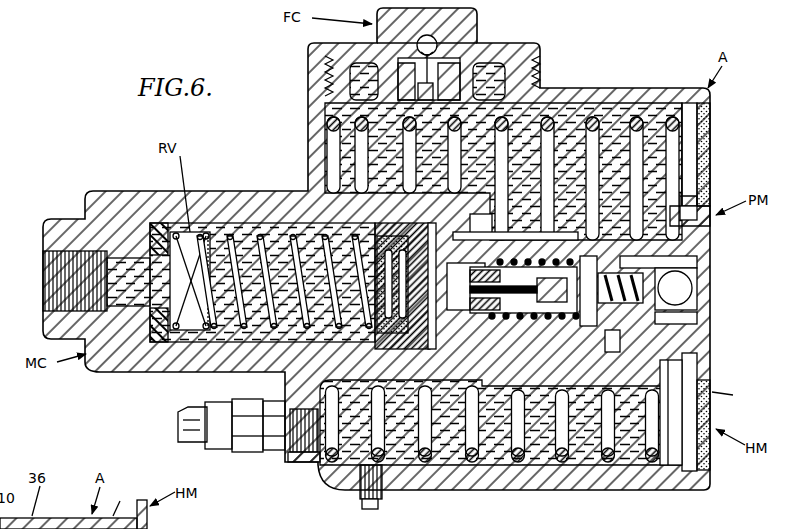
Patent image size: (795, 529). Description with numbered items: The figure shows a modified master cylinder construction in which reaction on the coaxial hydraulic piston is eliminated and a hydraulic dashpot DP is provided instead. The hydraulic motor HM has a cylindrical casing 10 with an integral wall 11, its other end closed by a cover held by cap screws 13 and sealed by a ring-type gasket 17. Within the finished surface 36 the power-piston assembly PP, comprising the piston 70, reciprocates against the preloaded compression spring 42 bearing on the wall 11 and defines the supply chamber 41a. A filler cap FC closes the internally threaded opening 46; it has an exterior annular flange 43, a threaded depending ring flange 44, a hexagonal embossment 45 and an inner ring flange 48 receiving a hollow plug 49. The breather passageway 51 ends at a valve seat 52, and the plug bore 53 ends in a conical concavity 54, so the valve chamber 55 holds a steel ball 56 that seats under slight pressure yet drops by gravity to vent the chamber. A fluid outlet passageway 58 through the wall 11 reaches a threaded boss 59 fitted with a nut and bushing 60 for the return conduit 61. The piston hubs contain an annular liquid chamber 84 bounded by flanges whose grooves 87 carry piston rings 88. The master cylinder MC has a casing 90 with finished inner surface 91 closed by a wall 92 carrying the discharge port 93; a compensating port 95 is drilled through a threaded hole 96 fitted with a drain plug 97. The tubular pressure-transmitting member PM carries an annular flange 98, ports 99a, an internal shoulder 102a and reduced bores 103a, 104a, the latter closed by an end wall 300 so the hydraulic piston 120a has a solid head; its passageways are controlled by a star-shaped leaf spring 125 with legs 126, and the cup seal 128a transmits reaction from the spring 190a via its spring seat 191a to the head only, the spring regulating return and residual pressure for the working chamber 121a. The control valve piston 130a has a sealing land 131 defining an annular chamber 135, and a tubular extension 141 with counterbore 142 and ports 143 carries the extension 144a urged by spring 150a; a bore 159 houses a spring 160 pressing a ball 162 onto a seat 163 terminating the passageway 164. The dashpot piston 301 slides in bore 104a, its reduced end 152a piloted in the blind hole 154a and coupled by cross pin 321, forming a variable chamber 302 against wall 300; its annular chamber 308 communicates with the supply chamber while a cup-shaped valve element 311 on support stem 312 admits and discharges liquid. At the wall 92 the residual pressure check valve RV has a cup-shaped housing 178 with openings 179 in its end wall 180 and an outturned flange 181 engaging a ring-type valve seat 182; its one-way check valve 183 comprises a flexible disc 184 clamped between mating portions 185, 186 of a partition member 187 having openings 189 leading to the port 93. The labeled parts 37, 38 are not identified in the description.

The cylindrical casing 10 is at (712, 100).
The integral wall 11 is at (312, 125).
The finished surface 36 is at (690, 130).
The lower chamber 37 is at (530, 472).
The lower chamber wall 38 is at (505, 472).
The supply chamber 41a is at (650, 472).
The compression spring 42 is at (637, 117).
The exterior annular flange 43 is at (541, 54).
The externally threaded depending ring flange 44 is at (506, 72).
The coaxial exterior embossment 45 is at (378, 13).
The internally threaded opening 46 is at (543, 80).
The depending ring-type flange 48 is at (372, 90).
The hollow plug 49 is at (380, 104).
The breather passageway 51 is at (438, 40).
The annular valve seat 52 is at (378, 30).
The coaxial bore 53 is at (352, 75).
The conical concavity 54 is at (330, 62).
The valve chamber 55 is at (440, 62).
The steel ball 56 is at (434, 50).
The fluid outlet passageway 58 is at (305, 462).
The internally threaded boss 59 is at (293, 458).
The threaded nut and bushing 60 is at (248, 452).
The fluid return conduit 61 is at (182, 430).
The piston 70 is at (690, 124).
The annular liquid chamber 84 is at (702, 206).
The internal annular groove 87 is at (690, 382).
The piston ring 88 is at (676, 412).
The cylindrical casing 90 is at (118, 374).
The finished inner cylindrical surface 91 is at (300, 215).
The wall 92 is at (120, 224).
The discharge port 93 is at (62, 270).
The compensating port 95 is at (300, 410).
The threaded hole 96 is at (362, 492).
The drain plug 97 is at (375, 506).
The annular flange 98 is at (615, 352).
The ports 99a is at (630, 388).
The internal annular shoulder 102a is at (600, 268).
The reduced diameter coaxial bore 103a is at (580, 388).
The bore 104a is at (478, 240).
The hydraulic piston 120a is at (438, 378).
The working chamber 121a is at (378, 235).
The star-shaped leaf spring 125 is at (448, 240).
The leg 126 is at (420, 235).
The cup seal 128a is at (384, 330).
The control valve piston 130a is at (718, 268).
The annular land 131 is at (690, 258).
The annular liquid chamber 135 is at (700, 250).
The tubular extension 141 is at (712, 355).
The counterbore 142 is at (708, 340).
The ports 143 is at (639, 341).
The reduced diameter extension 144a is at (555, 348).
The compression spring 150a is at (548, 245).
The reduced end 152a is at (543, 299).
The blind hole 154a is at (530, 275).
The longitudinal bore 159 is at (614, 280).
The compression spring 160 is at (658, 251).
The ball-type element 162 is at (684, 288).
The valve seat 163 is at (710, 318).
The longitudinal liquid passageway 164 is at (700, 300).
The cup-shaped housing 178 is at (232, 236).
The openings 179 is at (238, 235).
The end wall 180 is at (205, 232).
The outturned annular flange 181 is at (160, 224).
The ring-type valve seat 182 is at (168, 228).
The one-way check-valve 183 is at (190, 281).
The flexible disc 184 is at (200, 332).
The mating portion 185 is at (190, 281).
The mating portion 186 is at (228, 332).
The partition member 187 is at (185, 332).
The openings 189 is at (182, 232).
The spring 190a is at (392, 250).
The spring seat 191a is at (390, 248).
The end wall 300 is at (460, 236).
The hydraulic piston 301 is at (520, 348).
The variable chamber 302 is at (478, 372).
The annular chamber 308 is at (523, 289).
The cup-shaped valve element 311 is at (511, 297).
The support stem 312 is at (458, 298).
The cross pin 321 is at (570, 245).
The ring-type gasket 17 is at (123, 500).
The cap screws 13 is at (184, 522).